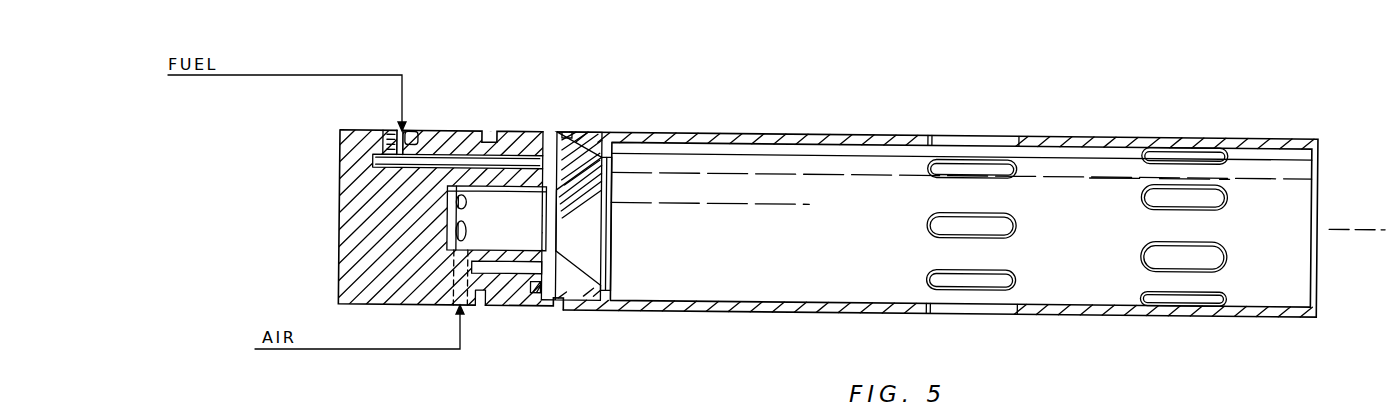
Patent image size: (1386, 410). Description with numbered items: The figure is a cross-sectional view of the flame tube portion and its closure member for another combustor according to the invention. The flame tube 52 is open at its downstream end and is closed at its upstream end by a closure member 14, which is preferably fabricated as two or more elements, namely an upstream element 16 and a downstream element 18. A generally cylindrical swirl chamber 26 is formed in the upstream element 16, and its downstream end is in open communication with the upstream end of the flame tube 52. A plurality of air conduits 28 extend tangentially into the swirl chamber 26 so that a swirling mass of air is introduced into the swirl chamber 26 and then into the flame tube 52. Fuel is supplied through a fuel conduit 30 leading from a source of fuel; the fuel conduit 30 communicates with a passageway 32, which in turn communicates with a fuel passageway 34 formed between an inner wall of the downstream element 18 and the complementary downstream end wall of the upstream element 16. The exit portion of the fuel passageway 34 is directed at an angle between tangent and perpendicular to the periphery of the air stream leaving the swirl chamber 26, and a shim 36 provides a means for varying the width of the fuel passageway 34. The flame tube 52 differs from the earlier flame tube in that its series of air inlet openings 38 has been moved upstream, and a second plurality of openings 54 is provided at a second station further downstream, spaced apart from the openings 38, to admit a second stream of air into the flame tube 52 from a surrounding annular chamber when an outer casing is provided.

The closure member 14 is at (332, 241).
The upstream element 16 is at (424, 273).
The downstream element 18 is at (571, 285).
The swirl chamber 26 is at (534, 246).
The air conduits 28 is at (468, 204).
The fuel conduit 30 is at (412, 130).
The passageway 32 is at (462, 156).
The fuel passageway 34 is at (548, 180).
The shim 36 is at (541, 133).
The air inlet openings 38 is at (1017, 226).
The flame tube 52 is at (787, 133).
The second plurality of openings 54 is at (1229, 197).